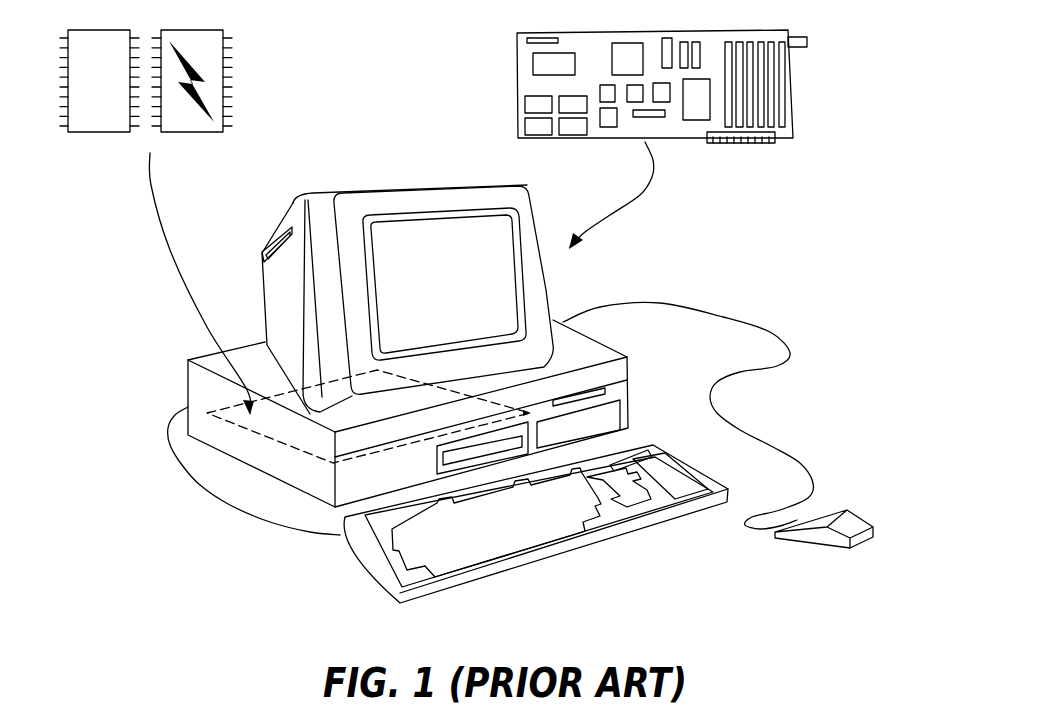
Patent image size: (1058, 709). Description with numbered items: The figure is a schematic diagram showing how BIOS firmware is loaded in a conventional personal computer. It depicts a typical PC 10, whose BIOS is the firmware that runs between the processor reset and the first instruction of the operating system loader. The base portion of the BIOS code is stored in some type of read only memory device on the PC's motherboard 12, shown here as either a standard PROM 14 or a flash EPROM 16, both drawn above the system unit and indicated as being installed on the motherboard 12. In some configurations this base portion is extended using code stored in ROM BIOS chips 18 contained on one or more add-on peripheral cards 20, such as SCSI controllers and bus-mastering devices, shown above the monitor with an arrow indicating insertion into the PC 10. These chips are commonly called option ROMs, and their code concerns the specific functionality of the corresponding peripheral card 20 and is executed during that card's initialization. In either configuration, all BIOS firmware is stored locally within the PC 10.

The PC 10 is at (543, 573).
The motherboard 12 is at (255, 427).
The PROM 14 is at (98, 125).
The flash EPROM 16 is at (196, 125).
The ROM BIOS chip 18 is at (533, 131).
The add-on peripheral card 20 is at (527, 73).